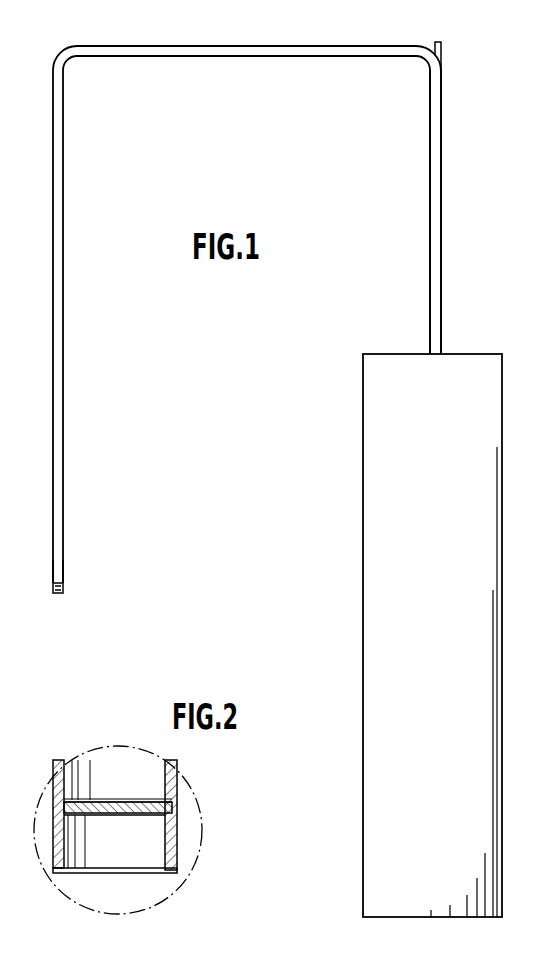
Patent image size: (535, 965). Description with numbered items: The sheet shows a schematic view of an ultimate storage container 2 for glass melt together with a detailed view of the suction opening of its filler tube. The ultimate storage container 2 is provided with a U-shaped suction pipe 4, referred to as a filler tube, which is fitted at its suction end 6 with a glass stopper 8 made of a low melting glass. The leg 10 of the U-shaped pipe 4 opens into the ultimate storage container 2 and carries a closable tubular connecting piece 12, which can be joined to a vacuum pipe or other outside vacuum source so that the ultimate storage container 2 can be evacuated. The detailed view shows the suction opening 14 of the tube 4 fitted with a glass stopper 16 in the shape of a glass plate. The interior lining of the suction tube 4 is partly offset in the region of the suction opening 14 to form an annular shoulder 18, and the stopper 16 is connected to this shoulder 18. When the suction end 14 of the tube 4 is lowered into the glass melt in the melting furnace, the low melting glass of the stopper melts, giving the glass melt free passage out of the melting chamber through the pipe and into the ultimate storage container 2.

In FIG. 1, the ultimate storage container 2 is at (363, 400).
In FIG. 1, the U-shaped suction pipe 4 is at (148, 57).
In FIG. 1, the suction end 6 is at (63, 575).
In FIG. 1, the glass stopper 8 is at (56, 594).
In FIG. 1, the leg 10 is at (430, 207).
In FIG. 1, the closable tubular connecting piece 12 is at (441, 50).
In FIG. 2, the suction opening 14 is at (177, 821).
In FIG. 2, the glass stopper 16 is at (148, 815).
In FIG. 2, the annular shoulder 18 is at (166, 800).